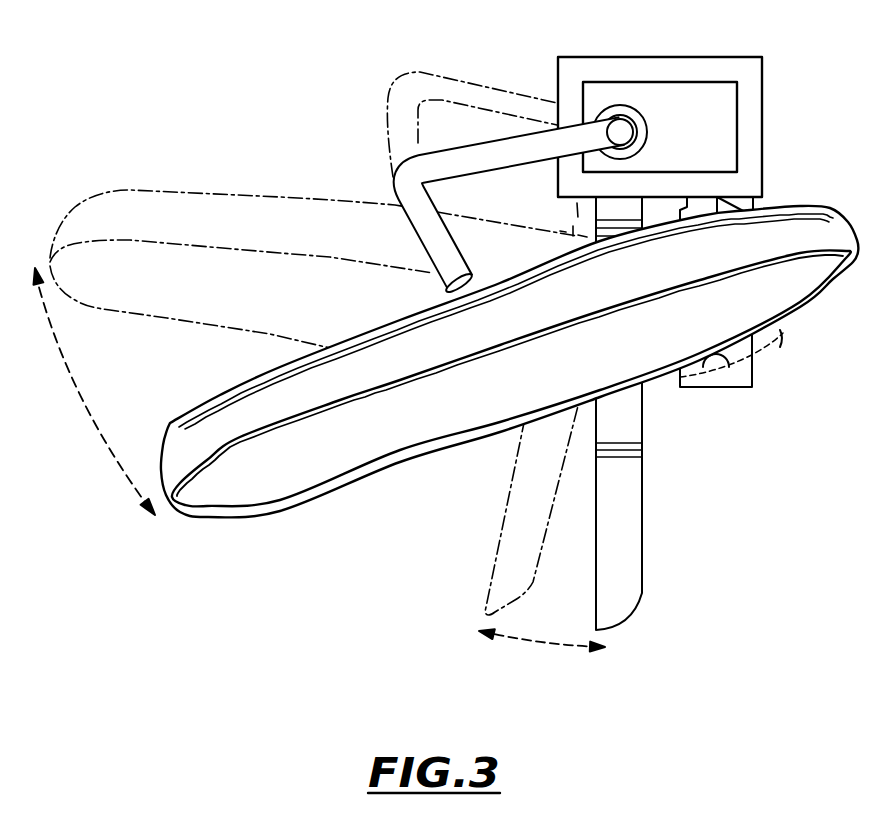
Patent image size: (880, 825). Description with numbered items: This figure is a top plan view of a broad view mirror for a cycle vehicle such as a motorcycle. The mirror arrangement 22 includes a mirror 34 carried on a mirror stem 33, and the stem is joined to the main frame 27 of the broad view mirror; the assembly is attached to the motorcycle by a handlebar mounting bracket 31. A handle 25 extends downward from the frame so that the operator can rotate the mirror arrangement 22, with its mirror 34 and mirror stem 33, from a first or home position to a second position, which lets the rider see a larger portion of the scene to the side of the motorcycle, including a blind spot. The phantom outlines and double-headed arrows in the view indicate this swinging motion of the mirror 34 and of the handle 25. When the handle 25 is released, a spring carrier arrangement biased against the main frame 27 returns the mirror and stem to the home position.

The mirror arrangement 22 is at (410, 163).
The handle 25 is at (603, 597).
The main frame 27 is at (705, 63).
The handlebar mounting bracket 31 is at (743, 387).
The mirror stem 33 is at (455, 262).
The mirror 34 is at (220, 397).